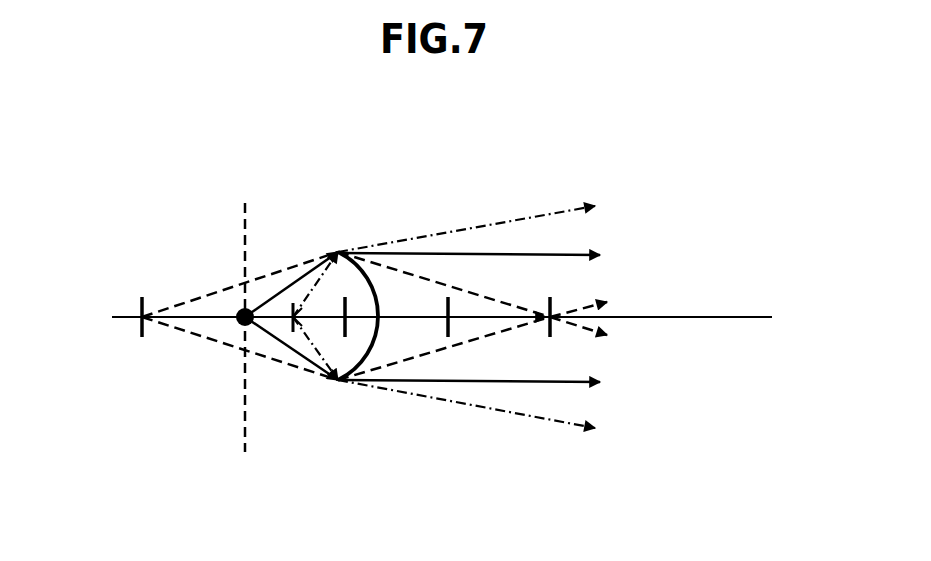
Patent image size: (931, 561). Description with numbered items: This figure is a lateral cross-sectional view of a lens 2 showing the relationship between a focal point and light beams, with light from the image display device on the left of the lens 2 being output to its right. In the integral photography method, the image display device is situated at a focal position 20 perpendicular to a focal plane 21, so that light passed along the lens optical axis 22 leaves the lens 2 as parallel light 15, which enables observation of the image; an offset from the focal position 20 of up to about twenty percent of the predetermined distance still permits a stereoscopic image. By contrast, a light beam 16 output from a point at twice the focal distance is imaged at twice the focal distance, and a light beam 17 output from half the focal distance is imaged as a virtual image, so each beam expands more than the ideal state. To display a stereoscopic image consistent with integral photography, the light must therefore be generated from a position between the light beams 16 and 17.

The lens 2 is at (378, 272).
The parallel light 15 is at (462, 382).
The light beam 16 is at (188, 297).
The light beam 17 is at (525, 418).
The focal position 20 is at (242, 327).
The focal plane 21 is at (245, 415).
The lens optical axis 22 is at (727, 318).